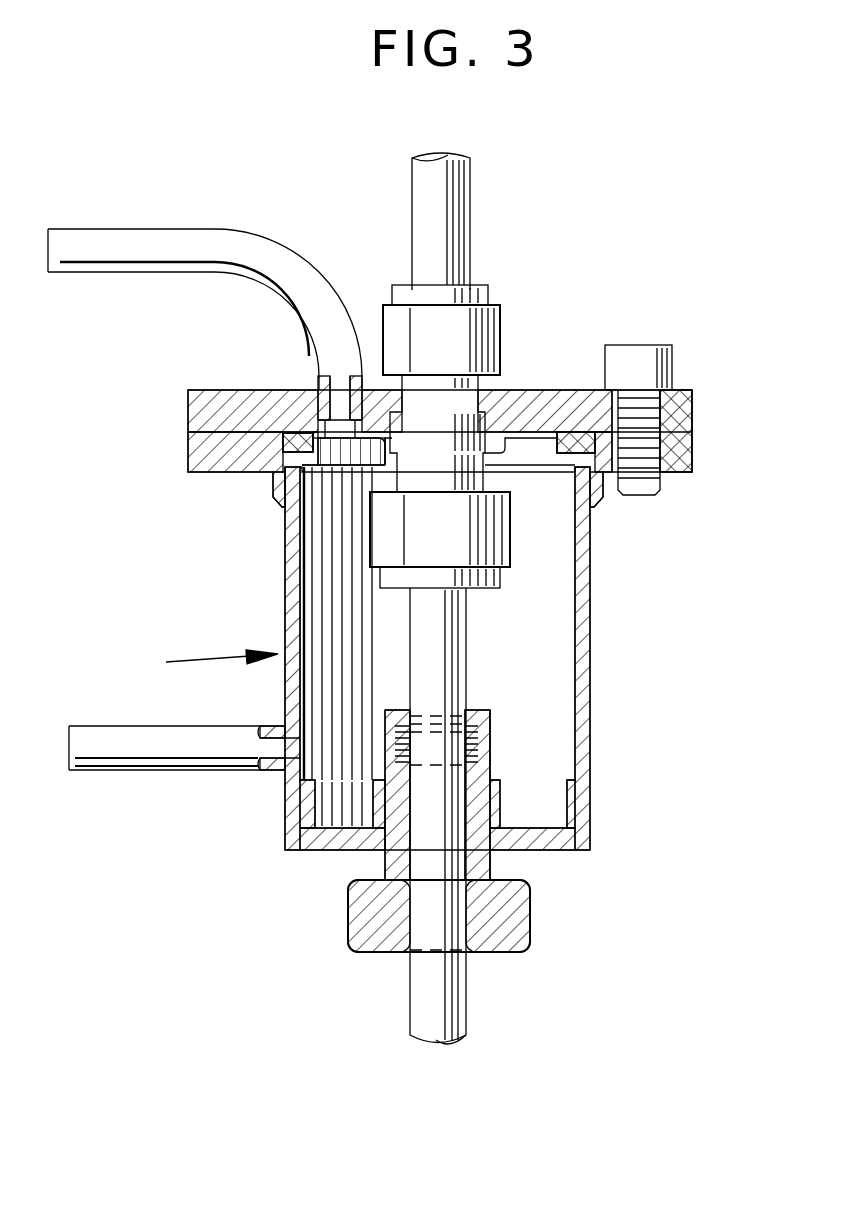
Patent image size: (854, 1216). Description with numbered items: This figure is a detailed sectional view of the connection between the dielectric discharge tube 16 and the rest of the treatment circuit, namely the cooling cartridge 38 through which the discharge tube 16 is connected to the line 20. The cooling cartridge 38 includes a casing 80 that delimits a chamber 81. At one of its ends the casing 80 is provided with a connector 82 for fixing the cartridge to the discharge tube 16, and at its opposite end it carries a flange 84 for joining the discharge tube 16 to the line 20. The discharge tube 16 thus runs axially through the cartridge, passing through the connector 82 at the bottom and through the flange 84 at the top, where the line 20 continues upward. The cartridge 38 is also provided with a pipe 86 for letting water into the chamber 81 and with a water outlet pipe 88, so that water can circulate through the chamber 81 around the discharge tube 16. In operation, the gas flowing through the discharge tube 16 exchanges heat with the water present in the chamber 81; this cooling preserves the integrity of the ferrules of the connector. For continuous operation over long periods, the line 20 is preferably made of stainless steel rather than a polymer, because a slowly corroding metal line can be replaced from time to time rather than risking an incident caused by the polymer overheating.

The discharge tube 16 is at (468, 666).
The line 20 is at (470, 230).
The cooling cartridge 38 is at (198, 665).
The casing 80 is at (287, 556).
The chamber 81 is at (545, 702).
The connector 82 is at (348, 916).
The flange 84 is at (502, 332).
The pipe 86 is at (167, 772).
The water outlet pipe 88 is at (173, 230).